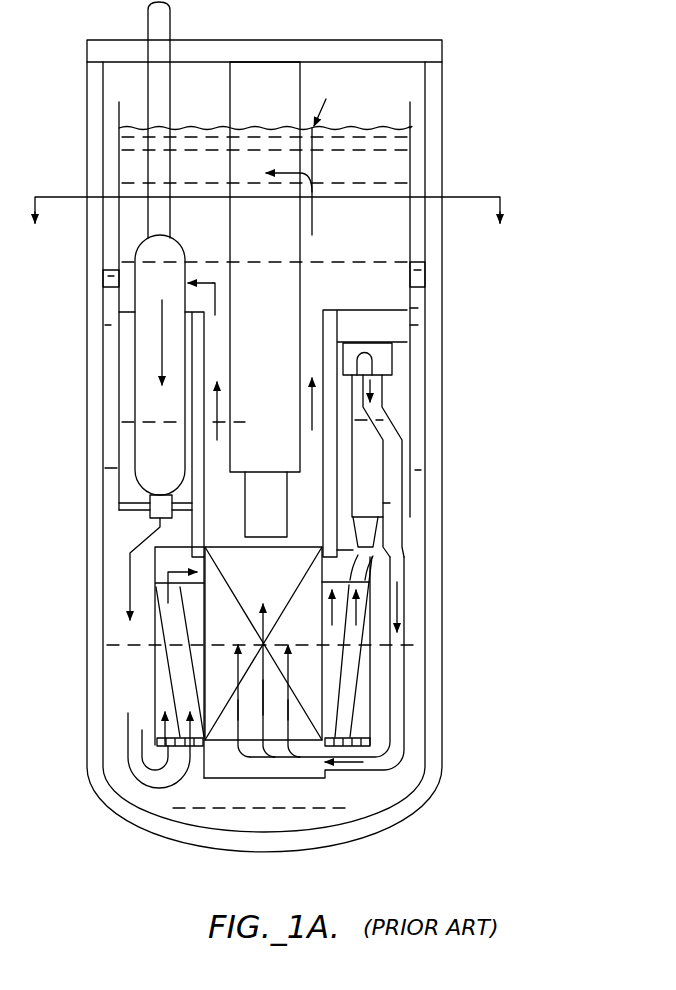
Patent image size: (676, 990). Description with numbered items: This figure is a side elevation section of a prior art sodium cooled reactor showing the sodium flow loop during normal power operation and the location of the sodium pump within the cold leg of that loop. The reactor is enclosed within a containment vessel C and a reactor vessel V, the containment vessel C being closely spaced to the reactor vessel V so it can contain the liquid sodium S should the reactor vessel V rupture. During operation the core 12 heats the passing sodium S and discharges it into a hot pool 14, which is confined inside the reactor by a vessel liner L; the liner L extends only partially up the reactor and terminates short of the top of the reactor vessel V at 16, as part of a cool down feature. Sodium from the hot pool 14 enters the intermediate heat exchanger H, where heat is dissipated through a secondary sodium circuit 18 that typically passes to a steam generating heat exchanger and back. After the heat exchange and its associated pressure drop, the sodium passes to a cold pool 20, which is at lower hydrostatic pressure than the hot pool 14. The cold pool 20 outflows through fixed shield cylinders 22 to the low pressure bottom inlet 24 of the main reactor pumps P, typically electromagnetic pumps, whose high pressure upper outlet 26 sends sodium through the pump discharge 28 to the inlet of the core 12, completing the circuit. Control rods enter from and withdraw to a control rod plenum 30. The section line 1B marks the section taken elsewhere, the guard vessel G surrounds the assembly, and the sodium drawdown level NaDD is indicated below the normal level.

The core 12 is at (278, 592).
The hot pool 14 is at (212, 176).
The termination of vessel liner 16 is at (119, 103).
The secondary sodium circuit 18 is at (172, 20).
The cold pool 20 is at (145, 702).
The fixed shield cylinders 22 is at (343, 693).
The inlet 24 is at (368, 577).
The outlet 26 is at (392, 356).
The pump discharge 28 is at (404, 554).
The control rod plenum 30 is at (283, 324).
The containment vessel C is at (441, 194).
The reactor vessel V is at (430, 351).
The guard vessel G is at (114, 375).
The vessel liner L is at (118, 327).
The intermediate heat exchanger H is at (150, 452).
The main reactor pumps P is at (380, 484).
The liquid sodium S is at (364, 176).
The section line 1B is at (272, 225).
The sodium drawdown level NaDD is at (417, 267).